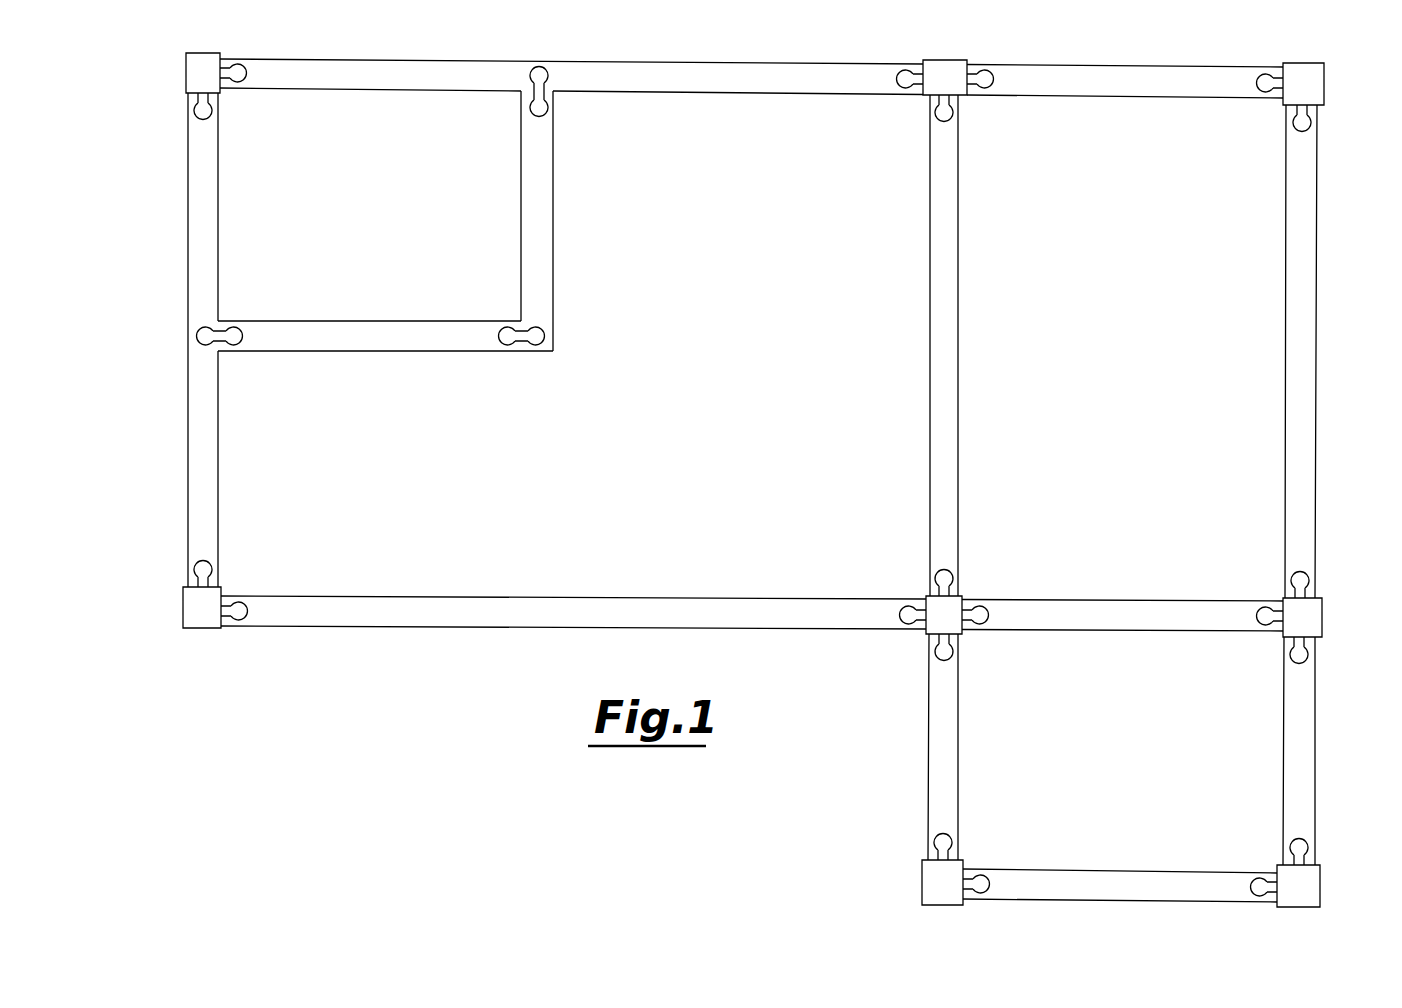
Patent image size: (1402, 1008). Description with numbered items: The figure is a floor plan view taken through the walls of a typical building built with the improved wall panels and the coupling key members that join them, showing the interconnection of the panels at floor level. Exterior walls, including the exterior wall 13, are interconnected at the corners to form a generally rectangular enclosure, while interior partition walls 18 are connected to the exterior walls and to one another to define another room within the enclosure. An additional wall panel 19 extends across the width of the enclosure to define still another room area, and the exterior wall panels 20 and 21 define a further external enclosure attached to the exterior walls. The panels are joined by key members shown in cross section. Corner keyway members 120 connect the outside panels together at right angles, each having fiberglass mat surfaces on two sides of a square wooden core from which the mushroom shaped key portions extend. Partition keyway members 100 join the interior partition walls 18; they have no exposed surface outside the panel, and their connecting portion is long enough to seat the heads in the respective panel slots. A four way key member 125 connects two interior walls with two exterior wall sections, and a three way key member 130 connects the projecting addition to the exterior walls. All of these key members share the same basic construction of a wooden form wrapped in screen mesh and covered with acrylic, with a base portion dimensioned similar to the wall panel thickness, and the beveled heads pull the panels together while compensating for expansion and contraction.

The exterior wall 13 is at (218, 478).
The interior partition wall 18 is at (554, 204).
The wall panel 19 is at (958, 478).
The exterior wall panel 20 is at (942, 748).
The exterior wall panel 21 is at (1148, 900).
The partition keyway member 100 is at (546, 82).
The corner keyway member 120 is at (185, 62).
The four way key member 125 is at (958, 632).
The three way key member 130 is at (957, 97).